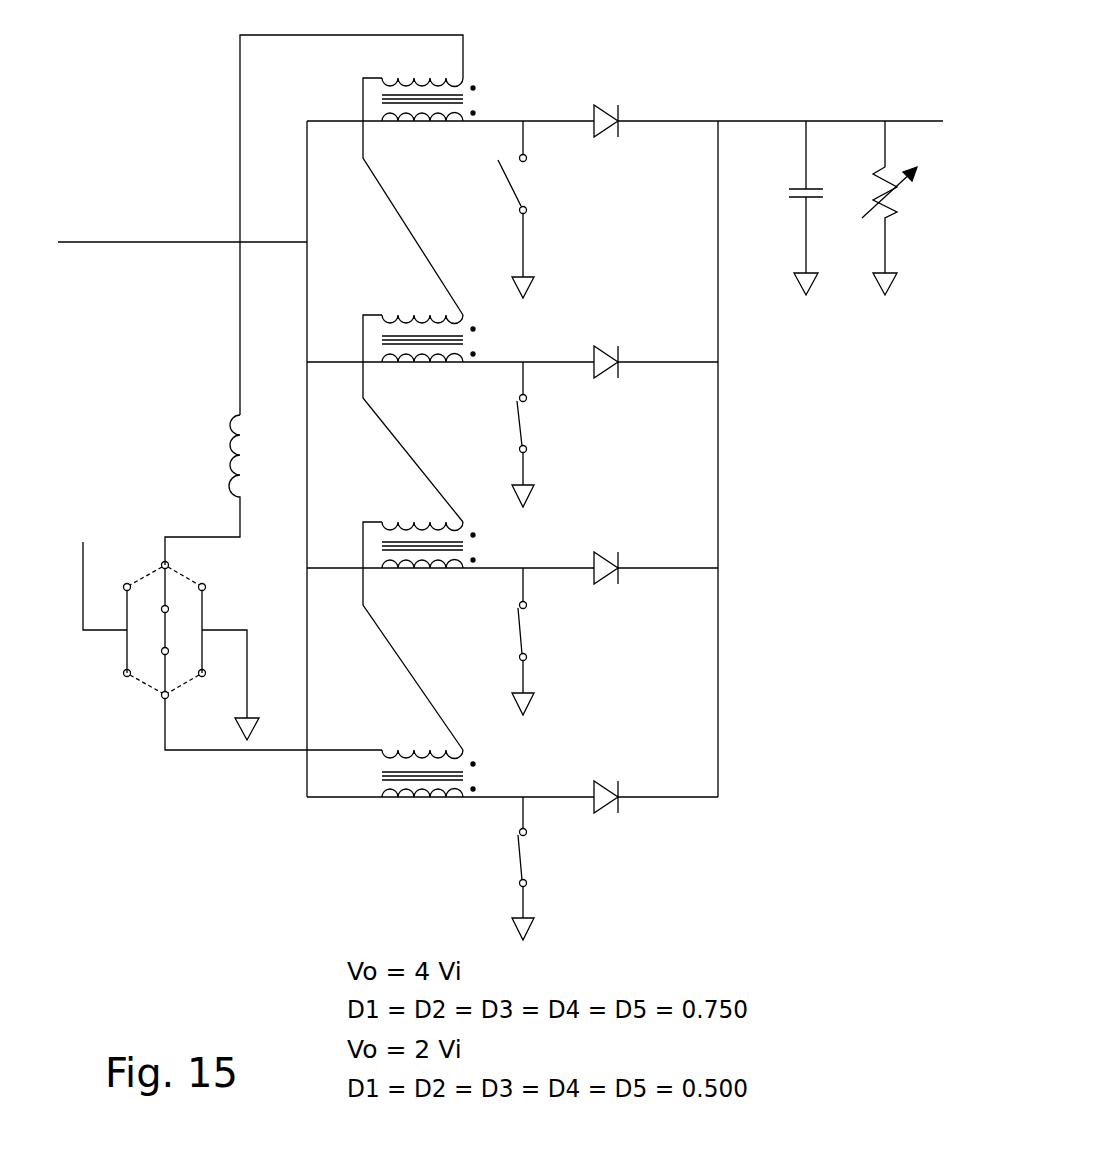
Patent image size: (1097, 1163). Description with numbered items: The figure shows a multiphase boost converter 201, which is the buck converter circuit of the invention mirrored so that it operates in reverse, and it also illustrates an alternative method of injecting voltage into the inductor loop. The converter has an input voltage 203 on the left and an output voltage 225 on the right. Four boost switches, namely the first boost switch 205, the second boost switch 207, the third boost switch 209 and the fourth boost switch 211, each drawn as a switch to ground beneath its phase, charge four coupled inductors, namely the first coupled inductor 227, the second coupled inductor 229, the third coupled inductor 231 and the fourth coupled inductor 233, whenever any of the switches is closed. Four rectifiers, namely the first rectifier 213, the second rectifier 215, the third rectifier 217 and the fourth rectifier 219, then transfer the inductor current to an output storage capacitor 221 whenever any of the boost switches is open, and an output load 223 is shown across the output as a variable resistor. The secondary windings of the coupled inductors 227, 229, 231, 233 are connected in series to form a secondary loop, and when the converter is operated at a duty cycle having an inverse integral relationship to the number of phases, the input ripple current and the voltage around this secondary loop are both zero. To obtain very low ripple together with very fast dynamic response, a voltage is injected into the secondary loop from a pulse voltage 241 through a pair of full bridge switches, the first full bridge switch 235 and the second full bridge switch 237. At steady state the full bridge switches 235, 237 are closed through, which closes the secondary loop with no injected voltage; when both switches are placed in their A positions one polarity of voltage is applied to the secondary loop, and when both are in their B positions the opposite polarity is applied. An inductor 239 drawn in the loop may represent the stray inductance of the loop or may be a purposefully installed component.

The multiphase boost converter 201 is at (193, 48).
The input voltage Vi 203 is at (58, 220).
The boost switch S1 205 is at (540, 185).
The boost switch S2 207 is at (543, 423).
The boost switch S3 209 is at (545, 632).
The boost switch S4 211 is at (500, 875).
The rectifier Cr1 213 is at (607, 102).
The rectifier Cr2 215 is at (627, 336).
The rectifier Cr3 217 is at (625, 555).
The rectifier Cr4 219 is at (623, 765).
The output storage capacitor C1 221 is at (777, 168).
The output load 223 is at (905, 223).
The output voltage Vo 225 is at (945, 110).
The coupled inductor T1 227 is at (488, 92).
The coupled inductor T2 229 is at (383, 297).
The coupled inductor T3 231 is at (402, 505).
The coupled inductor T4 233 is at (388, 812).
The full bridge switch S5a 235 is at (183, 568).
The full bridge switch S5b 237 is at (148, 700).
The inductor L 239 is at (222, 435).
The voltage Vp 241 is at (93, 545).